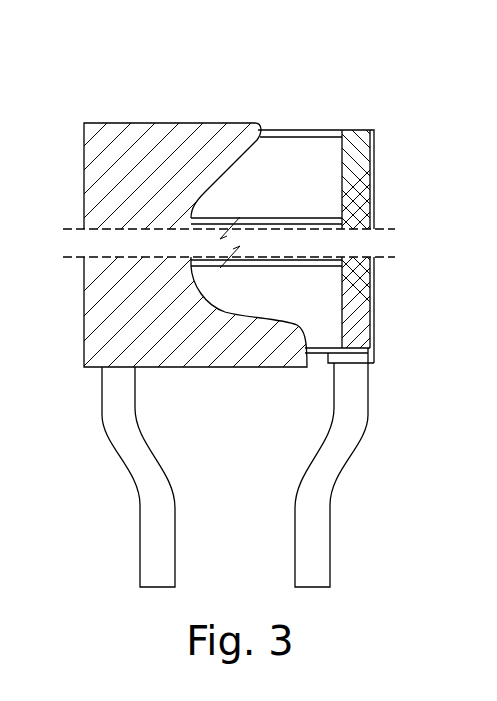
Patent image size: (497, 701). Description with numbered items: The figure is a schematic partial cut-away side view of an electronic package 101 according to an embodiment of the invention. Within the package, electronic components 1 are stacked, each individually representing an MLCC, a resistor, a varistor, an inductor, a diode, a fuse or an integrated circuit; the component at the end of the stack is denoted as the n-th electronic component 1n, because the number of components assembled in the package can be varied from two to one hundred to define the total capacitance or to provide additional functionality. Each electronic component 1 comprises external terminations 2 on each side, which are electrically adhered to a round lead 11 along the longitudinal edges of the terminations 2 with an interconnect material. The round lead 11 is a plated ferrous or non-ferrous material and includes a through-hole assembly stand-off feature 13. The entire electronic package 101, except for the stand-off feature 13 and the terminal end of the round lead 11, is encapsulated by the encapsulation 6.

The electronic package 101 is at (292, 117).
The encapsulation 6 is at (92, 197).
The electronic component (n-th) 1n is at (322, 187).
The electronic component 1 is at (322, 307).
The external termination 2 is at (358, 322).
The through-hole assembly stand-off feature 13 is at (328, 462).
The round lead 11 is at (308, 538).